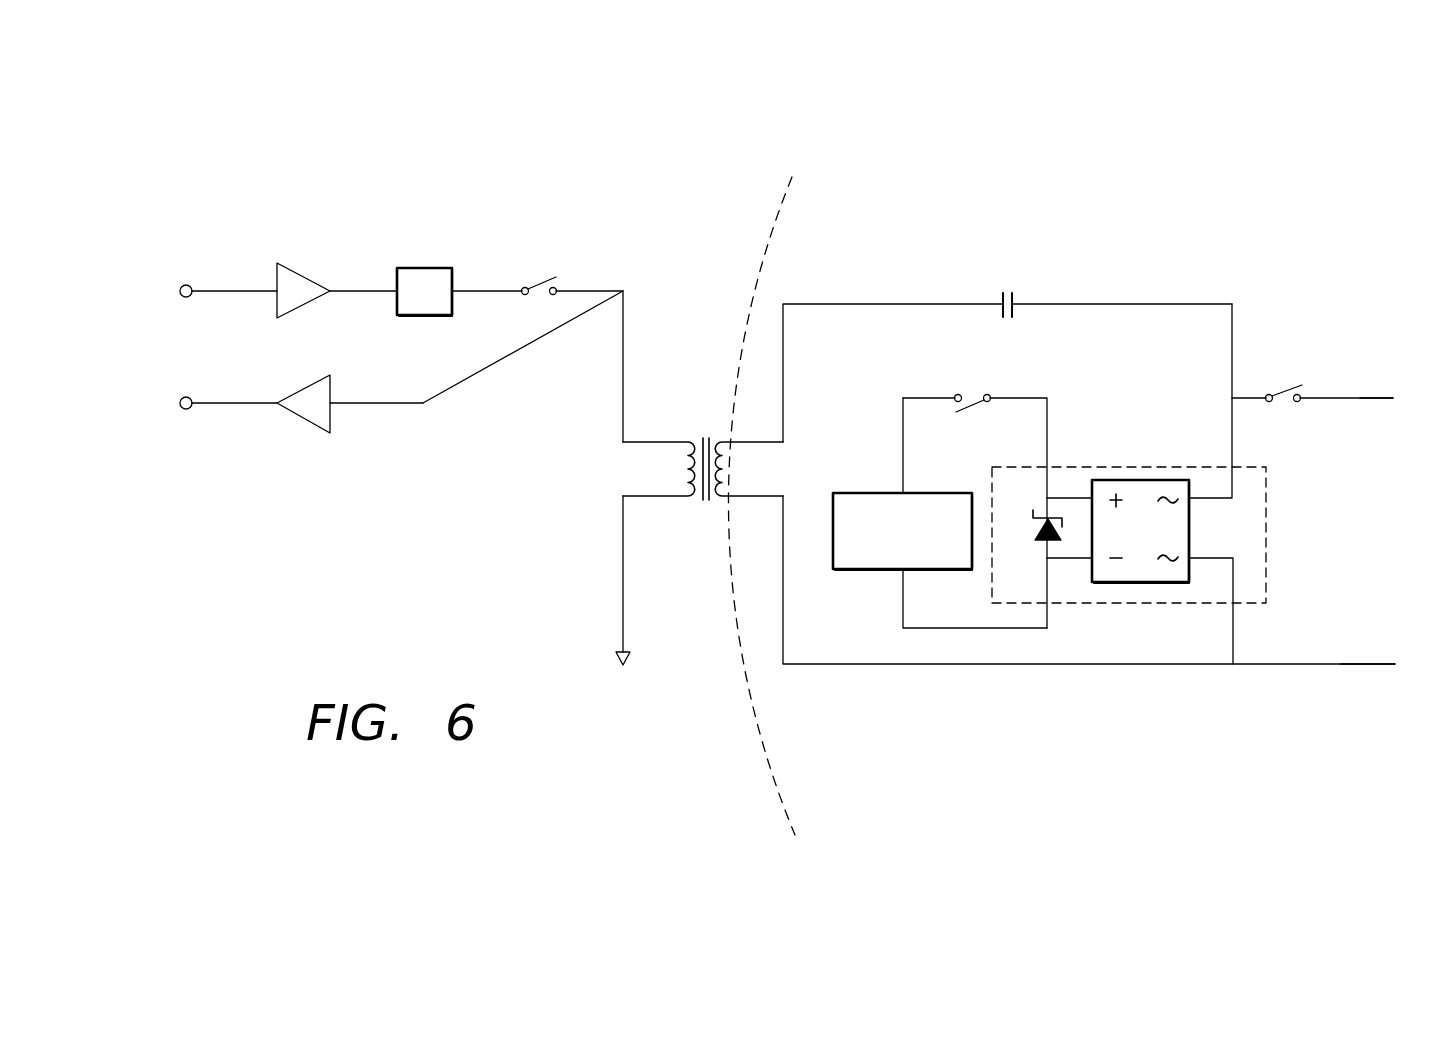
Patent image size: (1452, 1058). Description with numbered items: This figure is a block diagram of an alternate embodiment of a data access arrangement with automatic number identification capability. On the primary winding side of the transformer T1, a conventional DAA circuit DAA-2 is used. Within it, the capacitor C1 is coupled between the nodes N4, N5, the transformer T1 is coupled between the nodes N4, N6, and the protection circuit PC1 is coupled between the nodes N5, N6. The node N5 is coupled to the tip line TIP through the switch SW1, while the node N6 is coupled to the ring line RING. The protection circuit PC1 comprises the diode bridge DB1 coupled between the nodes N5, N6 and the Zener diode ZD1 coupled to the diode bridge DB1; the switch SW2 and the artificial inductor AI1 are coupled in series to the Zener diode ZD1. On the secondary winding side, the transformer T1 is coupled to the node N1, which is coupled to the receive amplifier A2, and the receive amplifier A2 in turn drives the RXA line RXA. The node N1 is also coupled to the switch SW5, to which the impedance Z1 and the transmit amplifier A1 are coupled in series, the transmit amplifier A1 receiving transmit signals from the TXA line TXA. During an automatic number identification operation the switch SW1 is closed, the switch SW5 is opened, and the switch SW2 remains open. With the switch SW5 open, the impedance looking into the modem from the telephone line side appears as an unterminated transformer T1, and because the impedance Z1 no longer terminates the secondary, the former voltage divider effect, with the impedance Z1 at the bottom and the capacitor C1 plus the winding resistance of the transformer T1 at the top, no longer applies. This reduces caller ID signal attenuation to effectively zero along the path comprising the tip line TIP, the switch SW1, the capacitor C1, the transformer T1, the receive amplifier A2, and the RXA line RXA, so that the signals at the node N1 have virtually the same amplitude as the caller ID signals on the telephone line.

The conventional DAA circuit DAA-2 is at (885, 212).
The TXA line TXA is at (218, 278).
The RXA line RXA is at (218, 390).
The transmit amplifier A1 is at (308, 270).
The receive amplifier A2 is at (300, 424).
The impedance Z1 is at (459, 292).
The switch SW5 is at (573, 271).
The node N1 is at (623, 317).
The transformer T1 is at (703, 469).
The node N4 is at (785, 378).
The capacitor C1 is at (1113, 291).
The node N5 is at (1233, 322).
The switch SW1 is at (1312, 377).
The tip line TIP is at (1380, 415).
The switch SW2 is at (975, 495).
The artificial inductor AI1 is at (868, 492).
The diode bridge DB1 is at (1145, 478).
The Zener diode ZD1 is at (1033, 539).
The protection circuit PC1 is at (1266, 563).
The node N6 is at (847, 665).
The ring line RING is at (1379, 682).